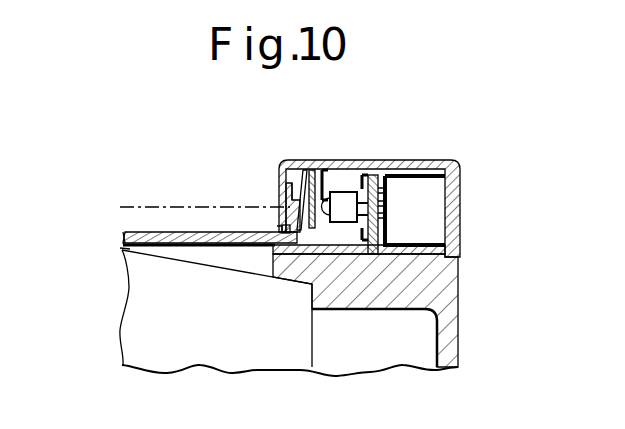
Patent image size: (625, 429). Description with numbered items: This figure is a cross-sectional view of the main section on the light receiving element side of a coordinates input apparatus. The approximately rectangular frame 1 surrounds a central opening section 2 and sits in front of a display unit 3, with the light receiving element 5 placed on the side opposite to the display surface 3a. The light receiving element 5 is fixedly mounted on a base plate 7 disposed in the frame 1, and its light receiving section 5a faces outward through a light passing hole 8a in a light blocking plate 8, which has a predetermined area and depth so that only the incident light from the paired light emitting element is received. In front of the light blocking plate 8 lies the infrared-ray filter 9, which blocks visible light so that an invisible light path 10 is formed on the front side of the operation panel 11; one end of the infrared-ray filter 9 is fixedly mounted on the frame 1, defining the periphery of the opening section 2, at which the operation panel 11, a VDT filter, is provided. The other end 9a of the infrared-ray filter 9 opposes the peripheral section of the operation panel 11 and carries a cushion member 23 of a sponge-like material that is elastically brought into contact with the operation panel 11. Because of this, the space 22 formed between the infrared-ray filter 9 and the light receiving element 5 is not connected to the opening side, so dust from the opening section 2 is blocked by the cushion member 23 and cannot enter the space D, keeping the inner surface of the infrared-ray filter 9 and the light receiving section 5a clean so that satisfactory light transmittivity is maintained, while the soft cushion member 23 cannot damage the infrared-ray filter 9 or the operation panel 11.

The frame 1 is at (452, 192).
The opening section 2 is at (178, 197).
The display unit 3 is at (445, 303).
The display surface 3a is at (118, 247).
The light receiving element 5 is at (343, 195).
The light receiving section 5a is at (340, 175).
The base plate 7 is at (389, 190).
The light blocking plate 8 is at (312, 172).
The light passing hole 8a is at (318, 182).
The infrared-ray filter 9 is at (278, 200).
The end section of the infrared-ray filter 9a is at (302, 246).
The light path 10 is at (147, 207).
The operation panel 11 is at (141, 232).
The space 22 is at (282, 229).
The cushion member 23 is at (279, 220).
The space D is at (290, 196).